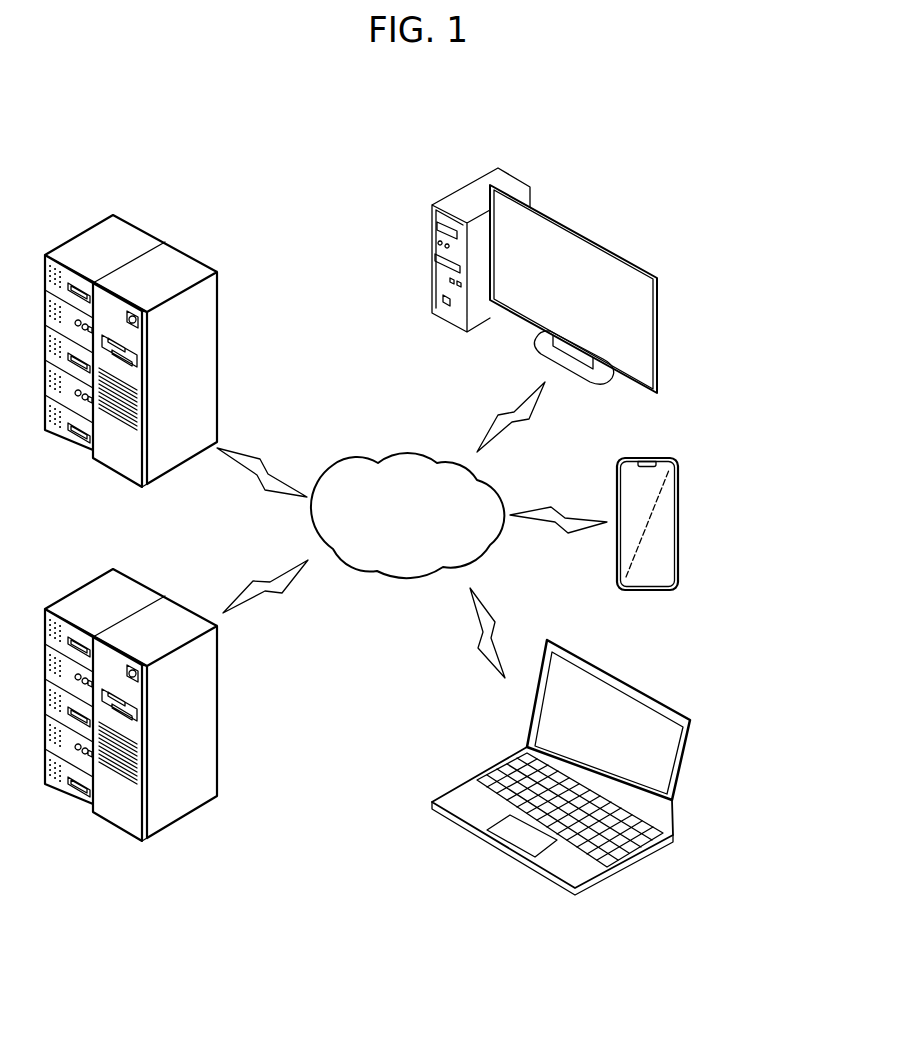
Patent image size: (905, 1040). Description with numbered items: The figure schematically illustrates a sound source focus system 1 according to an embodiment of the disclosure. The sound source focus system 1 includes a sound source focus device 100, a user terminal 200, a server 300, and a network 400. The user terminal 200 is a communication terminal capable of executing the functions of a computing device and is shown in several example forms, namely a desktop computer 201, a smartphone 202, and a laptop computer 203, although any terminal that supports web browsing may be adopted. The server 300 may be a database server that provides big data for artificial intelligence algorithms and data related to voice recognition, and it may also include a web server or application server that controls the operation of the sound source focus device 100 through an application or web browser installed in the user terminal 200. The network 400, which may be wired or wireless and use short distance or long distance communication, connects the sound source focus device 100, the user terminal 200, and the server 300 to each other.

The sound source focus system 1 is at (94, 93).
The sound source focus device 100 is at (177, 246).
The user terminal 200 is at (755, 323).
The desktop computer 201 is at (658, 338).
The smartphone 202 is at (679, 522).
The laptop computer 203 is at (690, 766).
The server 300 is at (179, 599).
The network 400 is at (350, 462).